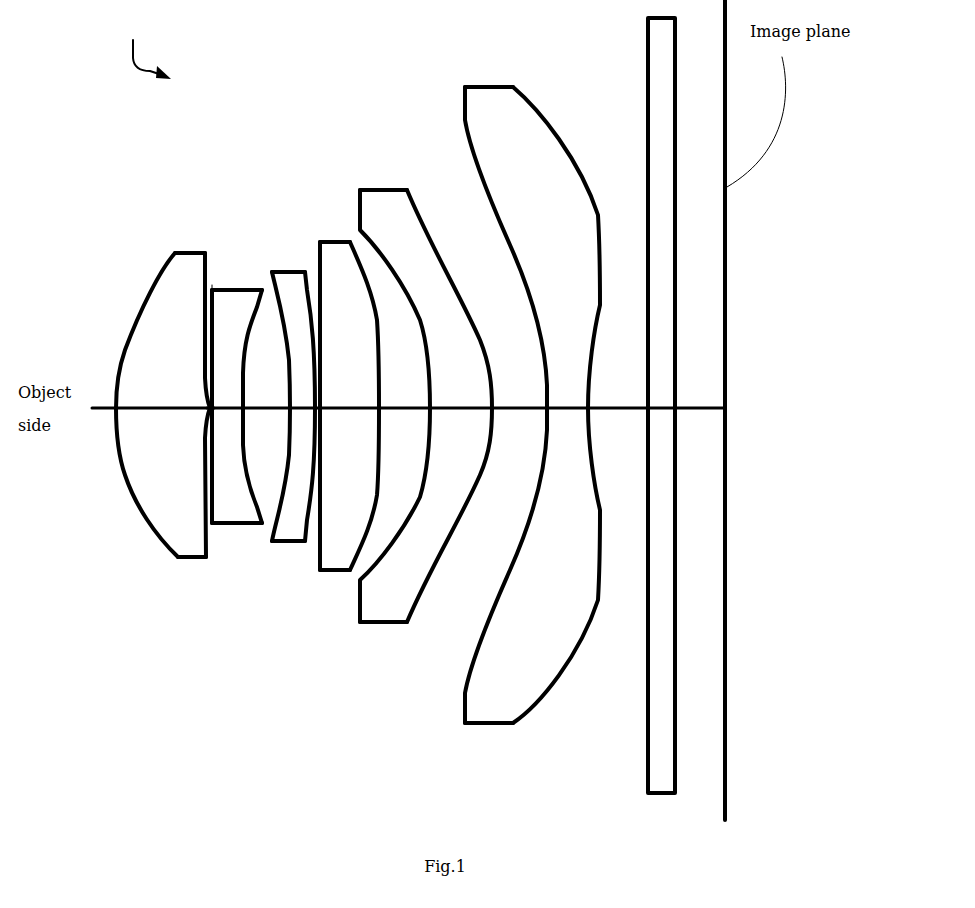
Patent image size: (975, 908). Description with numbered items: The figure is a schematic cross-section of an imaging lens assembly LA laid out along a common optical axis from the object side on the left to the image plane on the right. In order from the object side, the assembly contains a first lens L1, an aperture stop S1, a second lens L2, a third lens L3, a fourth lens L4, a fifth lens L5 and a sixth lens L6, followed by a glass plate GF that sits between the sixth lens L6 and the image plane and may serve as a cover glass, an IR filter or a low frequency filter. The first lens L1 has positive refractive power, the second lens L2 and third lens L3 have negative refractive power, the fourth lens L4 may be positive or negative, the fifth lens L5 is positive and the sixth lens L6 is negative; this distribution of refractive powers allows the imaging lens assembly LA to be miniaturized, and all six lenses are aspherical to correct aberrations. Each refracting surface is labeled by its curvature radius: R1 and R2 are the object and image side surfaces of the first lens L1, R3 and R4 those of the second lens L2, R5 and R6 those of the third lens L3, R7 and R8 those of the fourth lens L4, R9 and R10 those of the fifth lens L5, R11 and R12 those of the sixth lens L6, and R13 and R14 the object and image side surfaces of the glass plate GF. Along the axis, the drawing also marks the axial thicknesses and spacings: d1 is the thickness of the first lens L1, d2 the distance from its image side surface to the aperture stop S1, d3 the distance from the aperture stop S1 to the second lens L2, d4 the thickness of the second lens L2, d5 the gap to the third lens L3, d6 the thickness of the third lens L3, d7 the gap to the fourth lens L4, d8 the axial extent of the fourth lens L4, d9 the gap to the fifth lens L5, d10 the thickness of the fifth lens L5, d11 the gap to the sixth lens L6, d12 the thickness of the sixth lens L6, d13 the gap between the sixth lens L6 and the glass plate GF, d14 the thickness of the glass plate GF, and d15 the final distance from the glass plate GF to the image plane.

The imaging lens assembly LA is at (121, 38).
The first lens L1 is at (158, 422).
The second lens L2 is at (226, 444).
The third lens L3 is at (280, 449).
The fourth lens L4 is at (337, 448).
The fifth lens L5 is at (426, 433).
The sixth lens L6 is at (520, 428).
The glass plate GF is at (605, 417).
The aperture stop S1 is at (213, 282).
The curvature radius of the object side surface of the first lens R1 is at (118, 440).
The curvature radius of the image side surface of the first lens R2 is at (208, 433).
The curvature radius of the object side surface of the second lens R3 is at (212, 445).
The curvature radius of the image side surface of the second lens R4 is at (243, 443).
The curvature radius of the object side surface of the third lens R5 is at (290, 430).
The curvature radius of the image side surface of the third lens R6 is at (314, 432).
The curvature radius of the object side surface of the fourth lens R7 is at (319, 430).
The curvature radius of the image side surface of the fourth lens R8 is at (373, 448).
The curvature radius of the object side surface of the fifth lens R9 is at (433, 450).
The curvature radius of the image side surface of the fifth lens R10 is at (487, 457).
The curvature radius of the object side surface of the sixth lens R11 is at (540, 493).
The curvature radius of the image side surface of the sixth lens R12 is at (590, 505).
The curvature radius of the object side surface of the glass plate R13 is at (648, 520).
The curvature radius of the image side surface of the glass plate R14 is at (675, 552).
The axial thickness of the first lens d1 is at (163, 400).
The axial distance between the image side surface of the first lens and the aperture d2 is at (208, 406).
The axial distance between the aperture stop and the object side surface of the seco d3 is at (211, 406).
The axial thickness of the second lens d4 is at (227, 400).
The axial distance between the second lens and the third lens d5 is at (266, 400).
The axial thickness of the third lens d6 is at (302, 400).
The axial distance between the third lens and the fourth lens d7 is at (316, 300).
The axial thickness of the fourth lens d8 is at (349, 400).
The axial distance between the fourth lens and the fifth lens d9 is at (404, 400).
The axial thickness of the fifth lens d10 is at (461, 400).
The axial distance between the fifth lens and the sixth lens d11 is at (519, 400).
The axial thickness of the sixth lens d12 is at (567, 400).
The axial distance between the sixth lens and the glass plate d13 is at (618, 400).
The axial thickness of the glass plate d14 is at (656, 403).
The axial distance between the glass plate and the image plane d15 is at (700, 400).